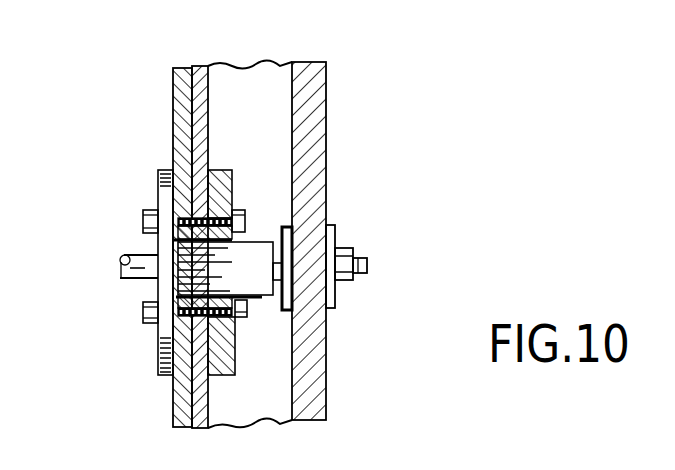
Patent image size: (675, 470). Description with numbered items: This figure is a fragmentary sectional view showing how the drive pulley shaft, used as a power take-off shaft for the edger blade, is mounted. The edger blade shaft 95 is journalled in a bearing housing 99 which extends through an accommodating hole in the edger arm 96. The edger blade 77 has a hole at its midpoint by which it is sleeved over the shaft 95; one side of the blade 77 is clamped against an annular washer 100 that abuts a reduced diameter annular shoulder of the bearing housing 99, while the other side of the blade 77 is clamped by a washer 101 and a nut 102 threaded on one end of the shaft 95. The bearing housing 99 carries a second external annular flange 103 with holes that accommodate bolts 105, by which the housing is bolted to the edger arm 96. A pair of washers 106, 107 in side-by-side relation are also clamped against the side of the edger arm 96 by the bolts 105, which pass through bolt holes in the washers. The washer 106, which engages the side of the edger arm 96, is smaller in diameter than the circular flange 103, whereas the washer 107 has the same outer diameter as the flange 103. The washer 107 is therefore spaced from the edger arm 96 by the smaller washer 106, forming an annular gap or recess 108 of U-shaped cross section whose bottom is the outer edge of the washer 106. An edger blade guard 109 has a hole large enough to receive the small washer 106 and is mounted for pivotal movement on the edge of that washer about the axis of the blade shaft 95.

The edger blade 77 is at (326, 100).
The edger blade shaft 95 is at (367, 262).
The edger arm 96 is at (173, 100).
The bearing housing 99 is at (228, 272).
The annular washer 100 is at (288, 312).
The washer 101 is at (337, 305).
The nut 102 is at (343, 247).
The second external annular flange 103 is at (158, 186).
The bolts 105 is at (143, 228).
The washer 106 is at (243, 180).
The washer 107 is at (233, 377).
The annular gap or recess 108 is at (235, 362).
The edger blade guard 109 is at (208, 95).